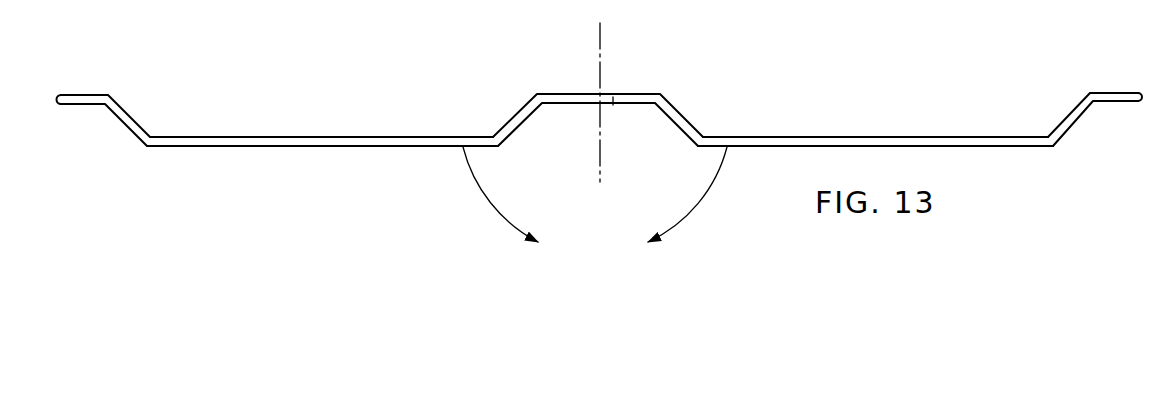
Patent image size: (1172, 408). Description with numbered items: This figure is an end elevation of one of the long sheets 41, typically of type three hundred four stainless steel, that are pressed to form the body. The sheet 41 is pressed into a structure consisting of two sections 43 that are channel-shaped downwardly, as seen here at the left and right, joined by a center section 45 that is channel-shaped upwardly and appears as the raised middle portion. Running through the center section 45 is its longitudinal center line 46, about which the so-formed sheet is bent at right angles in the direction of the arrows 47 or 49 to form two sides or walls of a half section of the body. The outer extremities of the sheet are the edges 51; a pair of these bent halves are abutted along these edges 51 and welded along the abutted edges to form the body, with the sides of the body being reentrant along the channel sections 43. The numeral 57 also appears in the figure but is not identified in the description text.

The sheet 41 is at (615, 110).
The sections channel-shaped downwardly 43 is at (1009, 148).
The center section 45 is at (552, 94).
The longitudinal center line 46 is at (601, 46).
The arrow 47 is at (713, 184).
The arrow 49 is at (473, 182).
The edges 51 is at (1141, 96).
The rib center point 57 is at (594, 103).